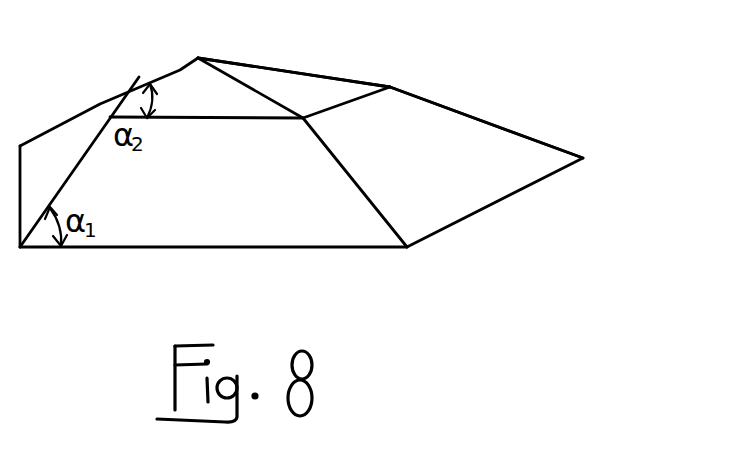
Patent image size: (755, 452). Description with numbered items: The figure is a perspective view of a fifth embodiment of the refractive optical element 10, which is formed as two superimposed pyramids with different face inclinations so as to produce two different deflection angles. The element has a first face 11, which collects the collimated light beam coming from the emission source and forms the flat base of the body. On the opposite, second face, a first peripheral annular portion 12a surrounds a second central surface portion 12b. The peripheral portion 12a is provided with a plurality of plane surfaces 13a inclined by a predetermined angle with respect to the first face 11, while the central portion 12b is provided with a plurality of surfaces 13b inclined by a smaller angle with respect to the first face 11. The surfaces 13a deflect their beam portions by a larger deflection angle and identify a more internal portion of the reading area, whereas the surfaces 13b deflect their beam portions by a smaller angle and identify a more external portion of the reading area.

The refractive optical element 10 is at (586, 122).
The first face 11 is at (310, 262).
The first peripheral annular portion 12a is at (444, 93).
The second central surface portion 12b is at (309, 57).
The surfaces 13a is at (75, 173).
The surfaces 13b is at (125, 54).